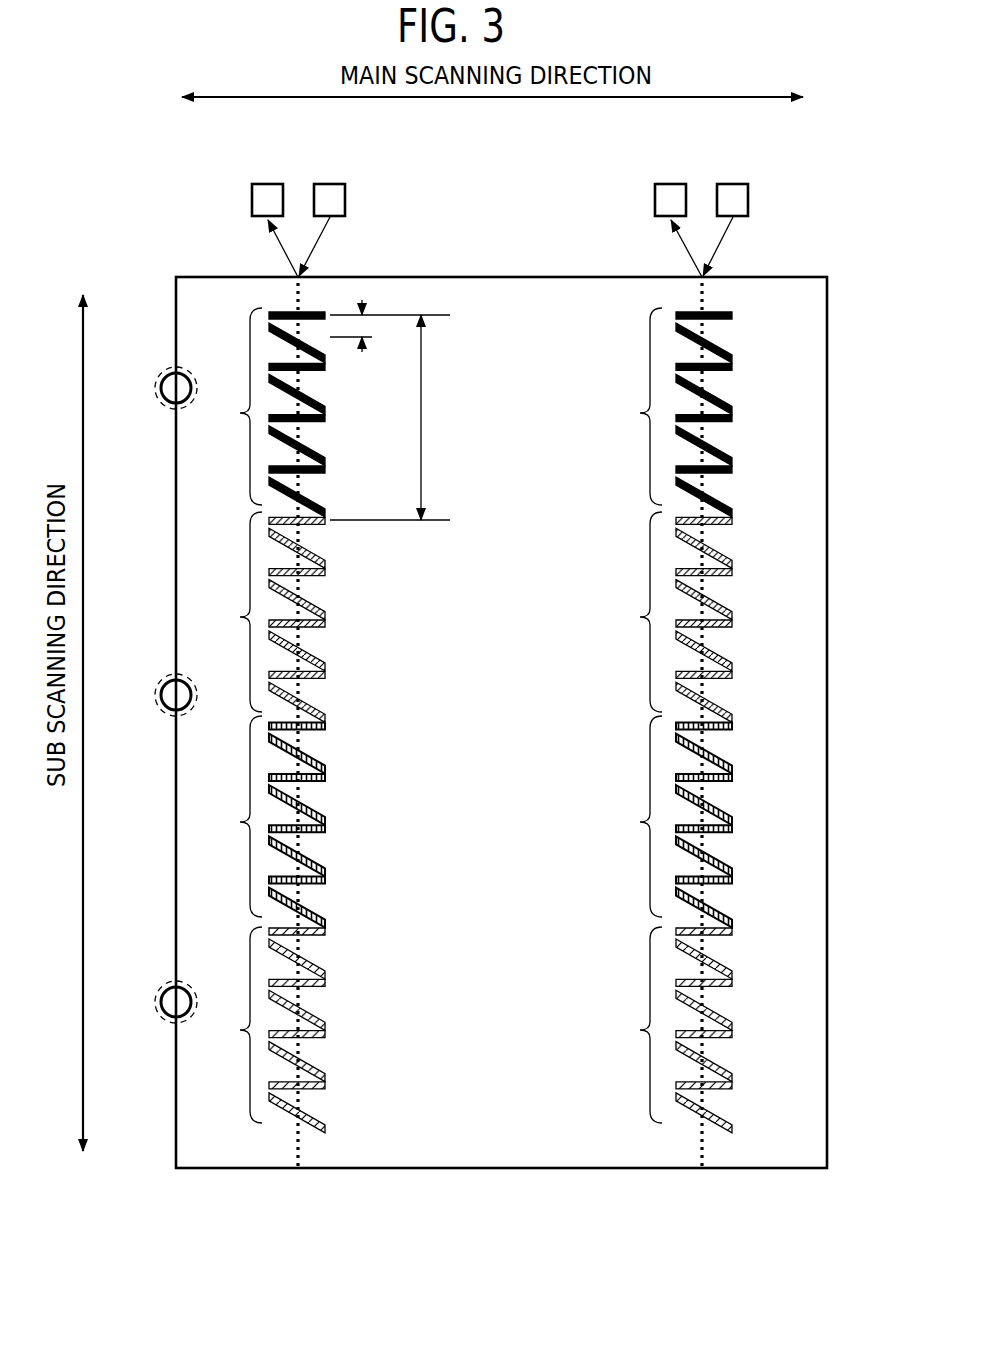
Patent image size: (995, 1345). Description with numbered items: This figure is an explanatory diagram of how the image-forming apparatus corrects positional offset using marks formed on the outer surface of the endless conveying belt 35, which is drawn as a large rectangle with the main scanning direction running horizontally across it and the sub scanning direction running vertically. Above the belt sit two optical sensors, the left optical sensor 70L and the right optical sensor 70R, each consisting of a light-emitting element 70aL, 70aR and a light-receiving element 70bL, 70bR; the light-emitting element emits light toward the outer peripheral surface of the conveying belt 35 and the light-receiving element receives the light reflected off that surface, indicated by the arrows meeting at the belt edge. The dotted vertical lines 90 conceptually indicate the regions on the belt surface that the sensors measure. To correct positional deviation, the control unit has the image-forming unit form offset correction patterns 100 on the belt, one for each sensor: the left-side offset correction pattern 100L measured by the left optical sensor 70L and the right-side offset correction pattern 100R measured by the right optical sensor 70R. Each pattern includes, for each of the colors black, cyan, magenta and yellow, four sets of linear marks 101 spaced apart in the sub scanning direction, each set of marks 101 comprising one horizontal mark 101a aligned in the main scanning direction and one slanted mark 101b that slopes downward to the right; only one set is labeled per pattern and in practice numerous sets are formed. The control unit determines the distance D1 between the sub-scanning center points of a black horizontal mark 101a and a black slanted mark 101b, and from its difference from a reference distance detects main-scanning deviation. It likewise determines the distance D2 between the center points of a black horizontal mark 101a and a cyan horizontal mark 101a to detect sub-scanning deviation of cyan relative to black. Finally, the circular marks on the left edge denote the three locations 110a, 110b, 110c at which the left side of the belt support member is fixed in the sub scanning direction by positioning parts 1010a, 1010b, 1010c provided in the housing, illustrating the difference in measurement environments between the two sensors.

The conveying belt 35 is at (498, 1170).
The left optical sensor 70L is at (323, 203).
The light-emitting element 70aL is at (345, 202).
The light-receiving element 70bL is at (252, 203).
The right optical sensor 70R is at (728, 202).
The light-emitting element 70aR is at (748, 202).
The light-receiving element 70bR is at (655, 203).
The offset correction pattern 100 is at (518, 720).
The left-side offset correction pattern 100L is at (360, 757).
The right-side offset correction pattern 100R is at (624, 556).
The set of linear marks 101 is at (545, 607).
The horizontal mark 101a is at (297, 572).
The slanted mark 101b is at (328, 592).
The dotted line 90 is at (300, 951).
The fixing location 110a is at (161, 390).
The fixing location 110b is at (161, 697).
The fixing location 110c is at (161, 1004).
The positioning part 1010a is at (162, 403).
The positioning part 1010b is at (162, 710).
The positioning part 1010c is at (162, 1017).
The distance D1 is at (364, 330).
The distance D2 is at (390, 417).